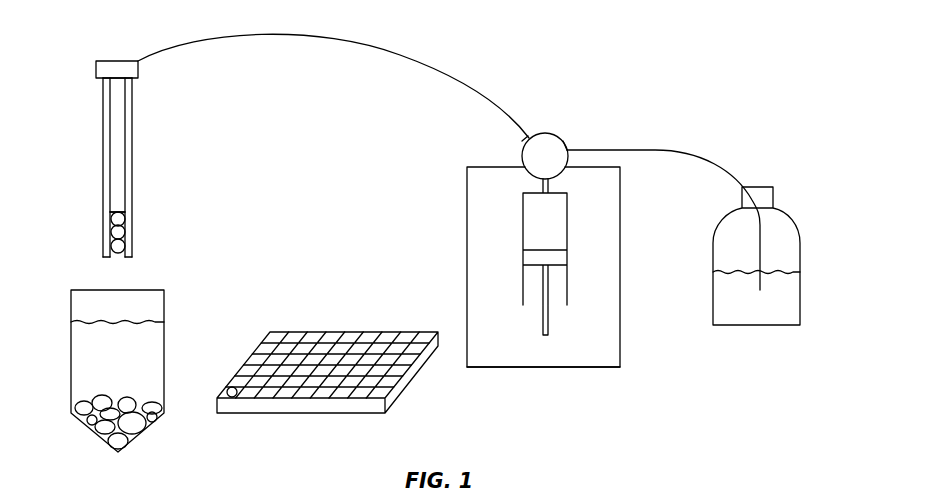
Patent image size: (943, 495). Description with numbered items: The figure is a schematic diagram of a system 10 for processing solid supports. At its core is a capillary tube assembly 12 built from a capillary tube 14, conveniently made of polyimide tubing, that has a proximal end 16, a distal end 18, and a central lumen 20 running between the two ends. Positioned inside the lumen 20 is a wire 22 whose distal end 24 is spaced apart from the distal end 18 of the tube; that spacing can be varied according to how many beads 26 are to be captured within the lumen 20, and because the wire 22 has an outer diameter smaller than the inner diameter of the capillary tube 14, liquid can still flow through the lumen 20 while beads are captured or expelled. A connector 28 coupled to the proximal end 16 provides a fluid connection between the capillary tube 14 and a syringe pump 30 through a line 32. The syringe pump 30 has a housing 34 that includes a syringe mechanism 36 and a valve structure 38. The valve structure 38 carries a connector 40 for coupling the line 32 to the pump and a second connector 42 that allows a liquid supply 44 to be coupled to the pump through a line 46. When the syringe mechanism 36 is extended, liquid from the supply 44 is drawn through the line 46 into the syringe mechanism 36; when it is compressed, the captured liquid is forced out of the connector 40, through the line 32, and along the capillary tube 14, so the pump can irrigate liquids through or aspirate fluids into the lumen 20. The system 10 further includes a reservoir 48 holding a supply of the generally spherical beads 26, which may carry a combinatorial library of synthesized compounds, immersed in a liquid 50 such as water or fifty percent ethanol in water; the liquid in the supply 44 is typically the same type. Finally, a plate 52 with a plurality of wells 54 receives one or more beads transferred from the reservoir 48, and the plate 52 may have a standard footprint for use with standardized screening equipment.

The system 10 is at (622, 48).
The capillary tube assembly 12 is at (205, 114).
The capillary tube 14 is at (134, 160).
The proximal end 16 is at (133, 80).
The distal end 18 is at (131, 258).
The central lumen 20 is at (126, 212).
The wire 22 is at (110, 112).
The distal end of wire 24 is at (115, 210).
The beads 26 is at (110, 250).
The connector 28 is at (117, 60).
The syringe pump 30 is at (550, 367).
The line 32 is at (222, 37).
The housing 34 is at (620, 347).
The syringe mechanism 36 is at (567, 240).
The valve structure 38 is at (545, 133).
The connector 40 is at (524, 141).
The connector 42 is at (565, 145).
The liquid supply 44 is at (795, 226).
The line 46 is at (718, 155).
The reservoir 48 is at (78, 340).
The liquid 50 is at (160, 340).
The plate 52 is at (352, 406).
The wells 54 is at (278, 340).